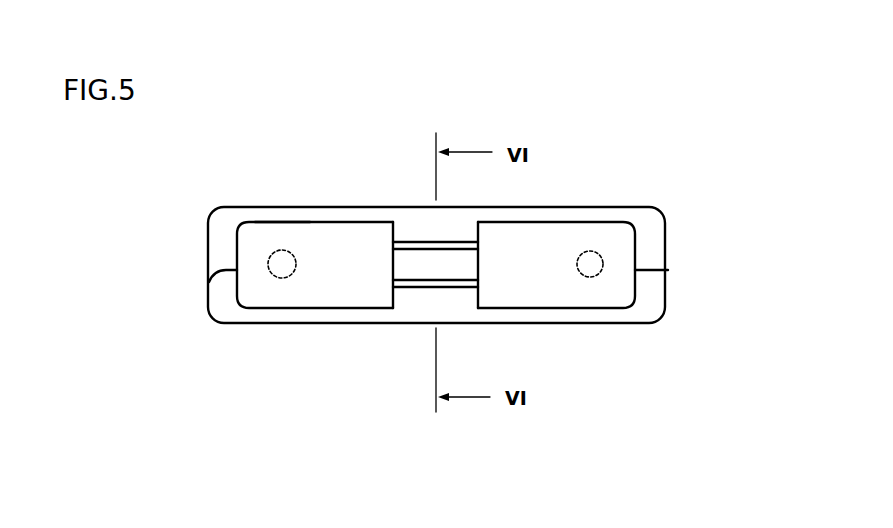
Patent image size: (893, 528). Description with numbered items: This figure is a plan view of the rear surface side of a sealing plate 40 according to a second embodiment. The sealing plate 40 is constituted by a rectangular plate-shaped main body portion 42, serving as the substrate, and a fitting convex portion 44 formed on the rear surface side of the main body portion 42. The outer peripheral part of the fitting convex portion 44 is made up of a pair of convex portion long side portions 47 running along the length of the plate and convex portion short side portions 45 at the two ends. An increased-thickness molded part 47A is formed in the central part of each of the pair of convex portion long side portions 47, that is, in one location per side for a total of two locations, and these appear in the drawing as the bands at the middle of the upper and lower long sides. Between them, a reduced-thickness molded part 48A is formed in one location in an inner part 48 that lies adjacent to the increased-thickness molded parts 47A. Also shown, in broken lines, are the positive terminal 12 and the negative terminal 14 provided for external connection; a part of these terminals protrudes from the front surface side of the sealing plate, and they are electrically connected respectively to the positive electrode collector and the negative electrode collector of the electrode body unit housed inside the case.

The positive terminal 12 is at (288, 276).
The negative terminal 14 is at (595, 276).
The sealing plate 40 is at (613, 204).
The main body portion 42 is at (321, 213).
The fitting convex portion 44 is at (280, 218).
The convex portion short side portion 45 is at (668, 270).
The convex portion long side portion 47 is at (553, 218).
The increased-thickness molded part 47A is at (410, 230).
The inner part 48 is at (537, 280).
The reduced-thickness molded part 48A is at (445, 262).